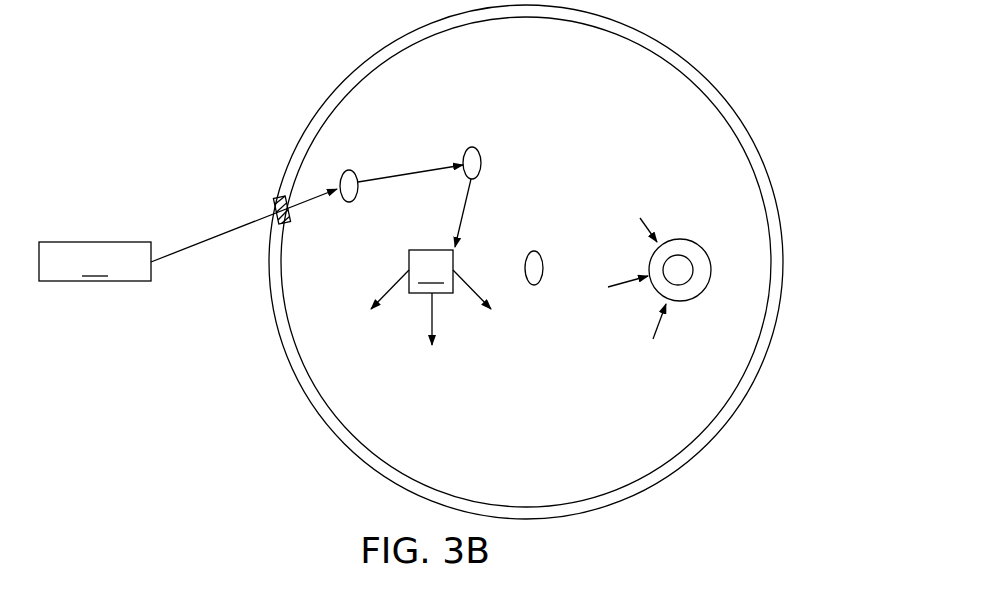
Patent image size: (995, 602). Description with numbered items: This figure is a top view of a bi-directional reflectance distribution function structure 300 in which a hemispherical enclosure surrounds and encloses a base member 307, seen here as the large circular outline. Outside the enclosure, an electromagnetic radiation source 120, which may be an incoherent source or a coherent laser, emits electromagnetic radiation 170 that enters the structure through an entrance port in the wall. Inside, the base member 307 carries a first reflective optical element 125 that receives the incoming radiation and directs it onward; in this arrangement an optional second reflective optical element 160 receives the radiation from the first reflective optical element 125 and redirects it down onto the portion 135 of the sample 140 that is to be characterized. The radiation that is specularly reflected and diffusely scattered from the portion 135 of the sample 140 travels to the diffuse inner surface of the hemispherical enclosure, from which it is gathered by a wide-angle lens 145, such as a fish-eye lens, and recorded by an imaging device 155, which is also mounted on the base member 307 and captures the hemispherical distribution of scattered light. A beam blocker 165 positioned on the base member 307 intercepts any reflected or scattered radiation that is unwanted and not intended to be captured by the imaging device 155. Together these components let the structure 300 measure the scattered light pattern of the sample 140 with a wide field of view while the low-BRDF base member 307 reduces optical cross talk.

The bi-directional reflectance distribution function structure 300 is at (225, 137).
The base member 307 is at (314, 410).
The electromagnetic radiation source 120 is at (95, 261).
The electromagnetic radiation 170 is at (205, 241).
The first reflective optical element 125 is at (352, 171).
The second reflective optical element 160 is at (481, 164).
The sample 140 is at (431, 271).
The portion of sample 135 is at (386, 268).
The beam blocker 165 is at (538, 251).
The wide-angle lens 145 is at (691, 242).
The imaging device 155 is at (686, 284).